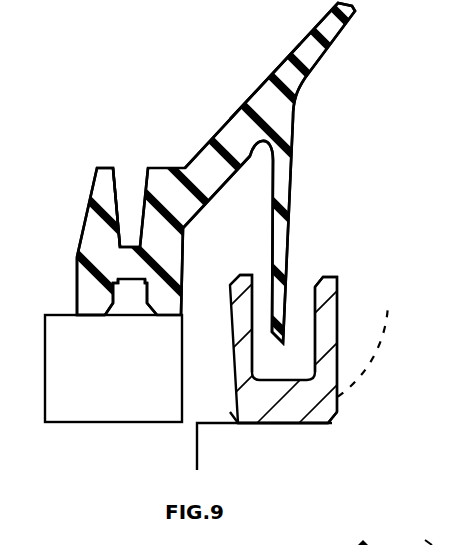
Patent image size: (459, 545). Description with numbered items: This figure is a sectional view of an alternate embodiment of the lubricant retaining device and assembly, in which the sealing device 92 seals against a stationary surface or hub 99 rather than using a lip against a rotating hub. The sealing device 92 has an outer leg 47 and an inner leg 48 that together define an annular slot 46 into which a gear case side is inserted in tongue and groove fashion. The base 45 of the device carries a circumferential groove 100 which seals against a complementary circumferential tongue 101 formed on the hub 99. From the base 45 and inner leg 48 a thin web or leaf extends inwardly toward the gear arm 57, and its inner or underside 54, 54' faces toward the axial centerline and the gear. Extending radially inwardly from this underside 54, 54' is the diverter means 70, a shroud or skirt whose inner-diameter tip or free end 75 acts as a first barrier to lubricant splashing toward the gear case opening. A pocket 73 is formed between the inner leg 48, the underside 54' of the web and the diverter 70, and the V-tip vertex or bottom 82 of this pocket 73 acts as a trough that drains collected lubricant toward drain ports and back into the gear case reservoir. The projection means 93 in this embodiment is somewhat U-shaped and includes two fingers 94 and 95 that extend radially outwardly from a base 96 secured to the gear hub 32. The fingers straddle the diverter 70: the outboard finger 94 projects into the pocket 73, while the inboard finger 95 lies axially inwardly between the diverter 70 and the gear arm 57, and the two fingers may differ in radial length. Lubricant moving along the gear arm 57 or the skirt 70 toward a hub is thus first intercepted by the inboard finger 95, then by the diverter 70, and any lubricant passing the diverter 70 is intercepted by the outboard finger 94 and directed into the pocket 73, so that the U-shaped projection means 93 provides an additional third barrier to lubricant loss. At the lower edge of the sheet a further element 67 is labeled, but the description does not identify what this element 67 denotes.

The gear hub 32 is at (240, 446).
The base 45 is at (112, 268).
The annular slot 46 is at (129, 193).
The outer leg 47 is at (92, 230).
The inner leg 48 is at (163, 247).
The underside of web 54 is at (270, 85).
The underside of web 54' is at (216, 196).
The gear arm 57 is at (367, 368).
The element 67 is at (420, 534).
The diverter means 70 is at (282, 187).
The pocket 73 is at (245, 233).
The free end of diverter 75 is at (334, 544).
The bottom of pocket 82 is at (266, 145).
The sealing device 92 is at (222, 113).
The projection means 93 is at (342, 323).
The finger 94 is at (243, 322).
The finger 95 is at (338, 278).
The base 96 is at (330, 414).
The hub 99 is at (128, 365).
The circumferential groove 100 is at (120, 287).
The circumferential tongue 101 is at (132, 286).